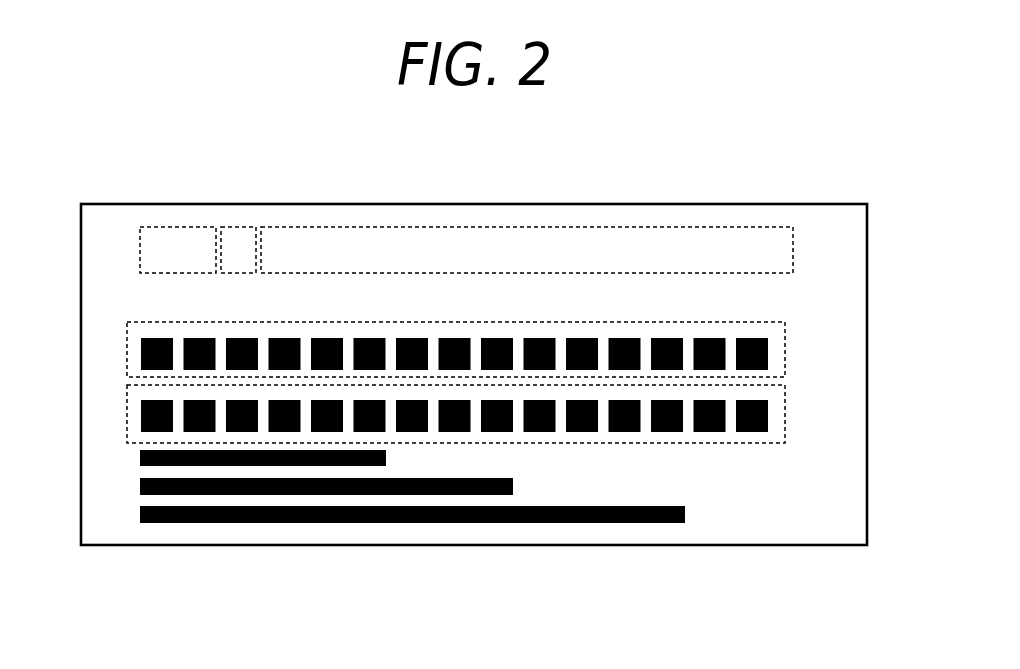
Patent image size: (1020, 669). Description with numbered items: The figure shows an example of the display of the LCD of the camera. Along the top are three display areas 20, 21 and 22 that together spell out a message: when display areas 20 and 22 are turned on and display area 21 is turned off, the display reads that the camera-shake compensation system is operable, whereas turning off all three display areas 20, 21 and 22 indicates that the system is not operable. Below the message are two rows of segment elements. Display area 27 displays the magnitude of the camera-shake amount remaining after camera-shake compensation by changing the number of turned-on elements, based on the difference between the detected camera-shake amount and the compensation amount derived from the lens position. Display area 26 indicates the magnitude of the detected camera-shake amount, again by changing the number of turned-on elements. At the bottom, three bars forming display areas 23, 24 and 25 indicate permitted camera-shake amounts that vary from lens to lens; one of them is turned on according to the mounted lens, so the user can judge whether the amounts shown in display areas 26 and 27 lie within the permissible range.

The display area 20 is at (139, 256).
The display area 21 is at (240, 228).
The display area 22 is at (740, 228).
The display area 23 is at (140, 456).
The display area 24 is at (140, 488).
The display area 25 is at (141, 510).
The display area 26 is at (748, 444).
The display area 27 is at (786, 354).